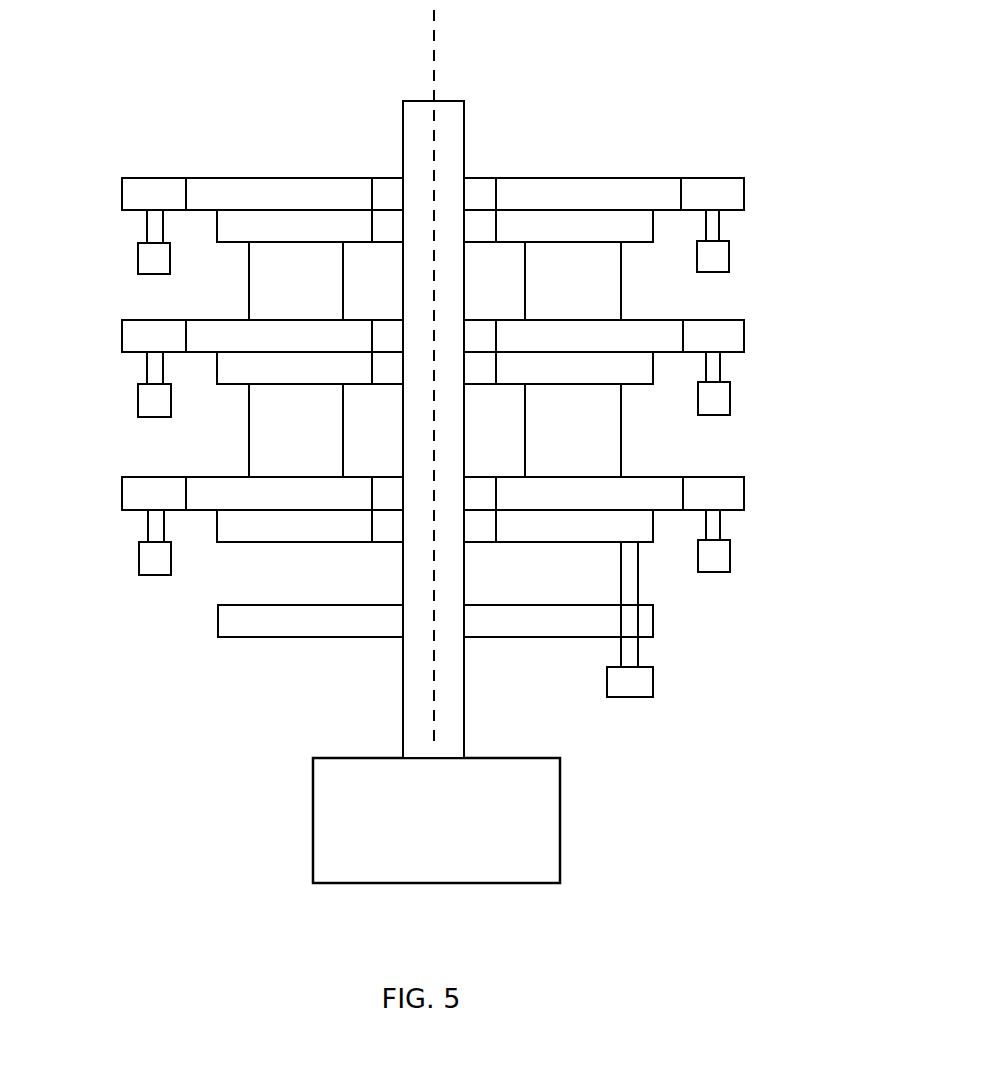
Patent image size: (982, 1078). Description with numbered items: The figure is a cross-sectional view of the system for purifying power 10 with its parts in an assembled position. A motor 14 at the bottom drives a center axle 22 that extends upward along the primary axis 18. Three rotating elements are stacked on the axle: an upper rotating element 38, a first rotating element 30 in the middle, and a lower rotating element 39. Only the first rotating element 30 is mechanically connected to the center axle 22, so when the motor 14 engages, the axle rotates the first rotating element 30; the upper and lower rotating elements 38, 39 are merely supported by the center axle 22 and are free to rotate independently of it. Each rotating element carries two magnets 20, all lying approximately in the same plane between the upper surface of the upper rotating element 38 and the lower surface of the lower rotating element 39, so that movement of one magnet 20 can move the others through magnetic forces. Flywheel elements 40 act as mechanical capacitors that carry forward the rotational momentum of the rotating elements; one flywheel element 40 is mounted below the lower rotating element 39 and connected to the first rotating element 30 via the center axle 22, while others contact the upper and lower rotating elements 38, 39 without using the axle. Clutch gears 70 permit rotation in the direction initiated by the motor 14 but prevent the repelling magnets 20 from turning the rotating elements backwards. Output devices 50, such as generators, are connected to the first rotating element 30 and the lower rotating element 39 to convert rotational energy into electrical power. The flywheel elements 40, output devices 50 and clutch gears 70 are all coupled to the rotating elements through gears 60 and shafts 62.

The system for purifying power 10 is at (657, 20).
The motor 14 is at (436, 820).
The primary axis 18 is at (434, 45).
The magnets 20 is at (264, 289).
The center axle 22 is at (455, 131).
The first rotating element 30 is at (663, 332).
The upper rotating element 38 is at (652, 193).
The lower rotating element 39 is at (637, 525).
The flywheel element 40 is at (712, 255).
The output device 50 is at (712, 397).
The gears 60 is at (132, 197).
The shafts 62 is at (155, 226).
The clutch gear 70 is at (147, 257).